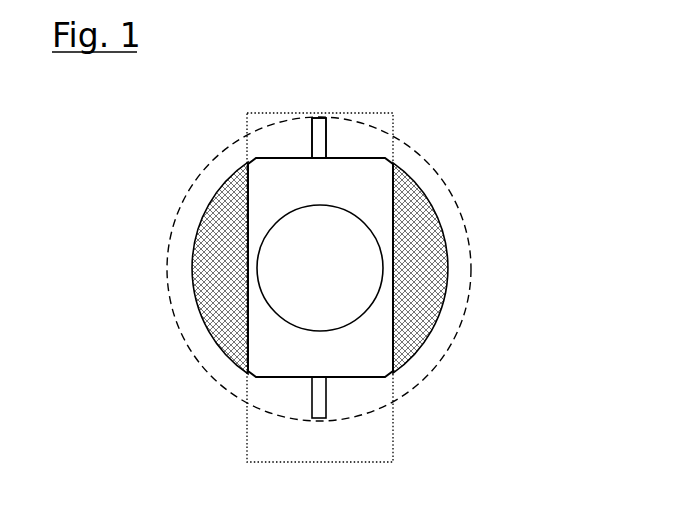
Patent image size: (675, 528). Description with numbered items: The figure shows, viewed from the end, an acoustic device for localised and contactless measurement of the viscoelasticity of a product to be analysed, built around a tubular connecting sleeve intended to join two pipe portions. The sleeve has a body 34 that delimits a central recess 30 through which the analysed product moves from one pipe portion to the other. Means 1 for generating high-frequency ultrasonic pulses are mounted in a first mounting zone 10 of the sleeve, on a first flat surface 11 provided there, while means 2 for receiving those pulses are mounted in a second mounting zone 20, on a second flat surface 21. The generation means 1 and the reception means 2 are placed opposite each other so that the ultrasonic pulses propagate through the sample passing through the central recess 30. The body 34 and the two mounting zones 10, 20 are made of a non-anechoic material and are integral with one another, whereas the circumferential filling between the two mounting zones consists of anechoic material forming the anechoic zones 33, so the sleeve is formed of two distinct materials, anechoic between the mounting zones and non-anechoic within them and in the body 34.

The means for generating high-frequency ultrasonic pulses 1 is at (247, 140).
The means for receiving high-frequency ultrasonic pulses 2 is at (333, 403).
The first mounting zone 10 is at (319, 117).
The first flat surface 11 is at (308, 143).
The second mounting zone 20 is at (320, 462).
The second flat surface 21 is at (284, 381).
The central recess 30 is at (303, 250).
The anechoic zones 33 is at (201, 273).
The body 34 is at (253, 306).